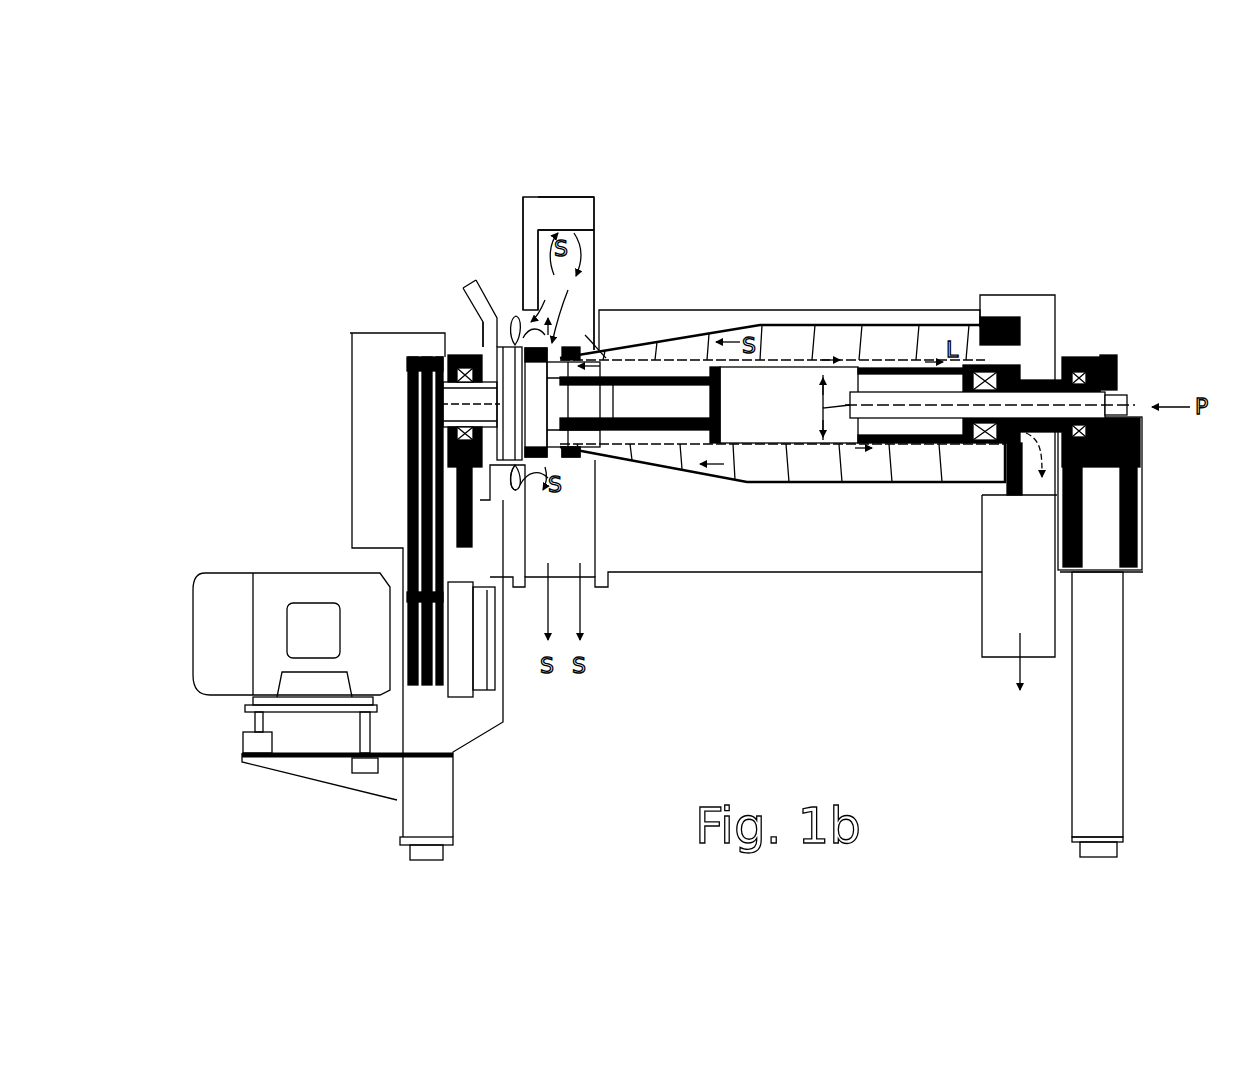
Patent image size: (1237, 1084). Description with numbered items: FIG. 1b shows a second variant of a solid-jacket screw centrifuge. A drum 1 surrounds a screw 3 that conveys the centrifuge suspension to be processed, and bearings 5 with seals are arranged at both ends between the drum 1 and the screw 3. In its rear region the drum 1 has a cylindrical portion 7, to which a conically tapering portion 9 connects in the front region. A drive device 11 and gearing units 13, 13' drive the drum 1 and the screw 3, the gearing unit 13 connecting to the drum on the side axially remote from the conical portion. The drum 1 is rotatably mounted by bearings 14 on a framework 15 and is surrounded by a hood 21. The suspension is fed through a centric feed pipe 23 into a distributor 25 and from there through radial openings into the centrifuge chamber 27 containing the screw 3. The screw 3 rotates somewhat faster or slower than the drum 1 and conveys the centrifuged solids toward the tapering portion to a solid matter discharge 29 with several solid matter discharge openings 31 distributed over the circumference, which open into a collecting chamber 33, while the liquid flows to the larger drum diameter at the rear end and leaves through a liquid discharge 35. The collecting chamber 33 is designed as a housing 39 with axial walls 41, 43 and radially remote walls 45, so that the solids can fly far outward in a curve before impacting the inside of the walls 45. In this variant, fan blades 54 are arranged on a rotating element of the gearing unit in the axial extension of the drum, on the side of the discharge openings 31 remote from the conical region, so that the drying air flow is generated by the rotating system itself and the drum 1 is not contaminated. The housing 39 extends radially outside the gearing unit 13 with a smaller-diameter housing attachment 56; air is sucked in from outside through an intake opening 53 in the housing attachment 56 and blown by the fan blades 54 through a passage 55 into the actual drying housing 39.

The drum 1 is at (952, 323).
The screw 3 is at (878, 364).
The bearings 5 is at (956, 528).
The cylindrical portion 7 is at (857, 487).
The conically tapering portion 9 is at (691, 337).
The drive device 11 is at (273, 592).
The gearing unit 13 is at (503, 349).
The gearing unit 13' is at (347, 527).
The bearings 14 is at (484, 333).
The framework 15 is at (463, 490).
The hood 21 is at (732, 308).
The feed pipe 23 is at (1033, 405).
The distributor 25 is at (817, 447).
The centrifuge chamber 27 is at (906, 336).
The solid matter discharge 29 is at (579, 329).
The solid matter discharge openings 31 is at (564, 462).
The collecting chamber 33 is at (570, 219).
The liquid discharge 35 is at (1027, 328).
The housing 39 is at (521, 191).
The axial wall 41 is at (523, 238).
The axial wall 43 is at (597, 197).
The radial walls 45 is at (562, 196).
The intake opening 53 is at (465, 290).
The fan blades 54 is at (516, 486).
The passage 55 is at (539, 228).
The housing attachment 56 is at (364, 311).